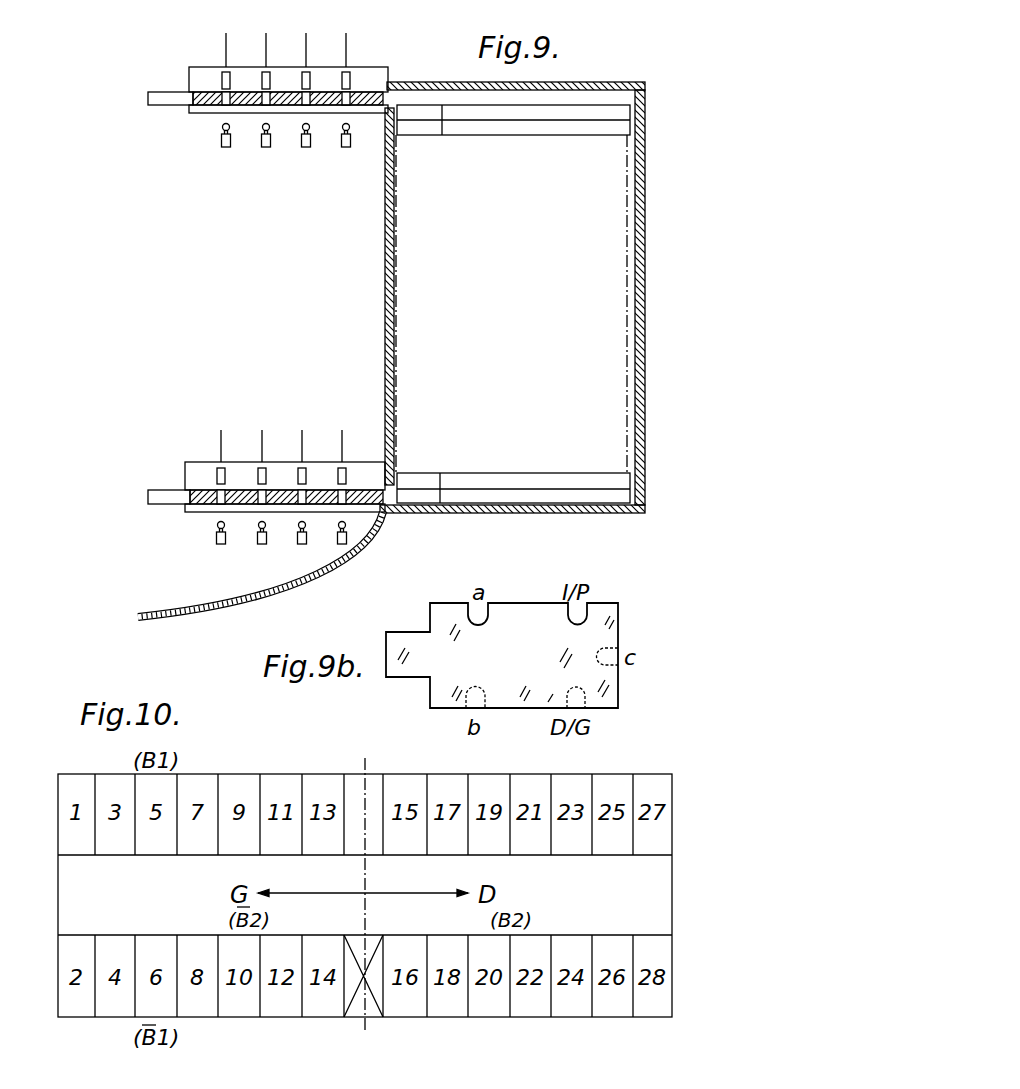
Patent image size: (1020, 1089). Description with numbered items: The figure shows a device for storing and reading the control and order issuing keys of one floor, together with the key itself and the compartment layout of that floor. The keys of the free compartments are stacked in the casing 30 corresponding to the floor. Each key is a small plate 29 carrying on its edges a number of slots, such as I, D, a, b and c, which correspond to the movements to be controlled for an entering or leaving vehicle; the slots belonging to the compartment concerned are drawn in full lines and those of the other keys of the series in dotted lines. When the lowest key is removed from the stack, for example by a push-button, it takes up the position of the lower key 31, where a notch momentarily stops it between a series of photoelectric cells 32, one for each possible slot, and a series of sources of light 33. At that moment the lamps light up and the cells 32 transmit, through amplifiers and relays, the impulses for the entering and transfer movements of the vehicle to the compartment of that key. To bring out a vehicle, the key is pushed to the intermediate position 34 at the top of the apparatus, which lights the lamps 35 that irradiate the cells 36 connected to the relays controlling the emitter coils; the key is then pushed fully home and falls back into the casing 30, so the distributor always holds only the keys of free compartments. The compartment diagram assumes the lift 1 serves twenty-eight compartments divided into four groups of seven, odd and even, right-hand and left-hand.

In FIG. 9, the casing 30 is at (640, 373).
In FIG. 9, the lower key 31 is at (357, 497).
In FIG. 9, the photoelectric cells 32 is at (220, 471).
In FIG. 9, the sources of light 33 is at (217, 542).
In FIG. 9, the intermediate position 34 is at (241, 106).
In FIG. 9, the lamps 35 is at (227, 149).
In FIG. 9, the cells 36 is at (223, 79).
In FIG. 9B, the small plate 29 is at (517, 620).
In FIG. 10, the lift 1 is at (372, 1005).